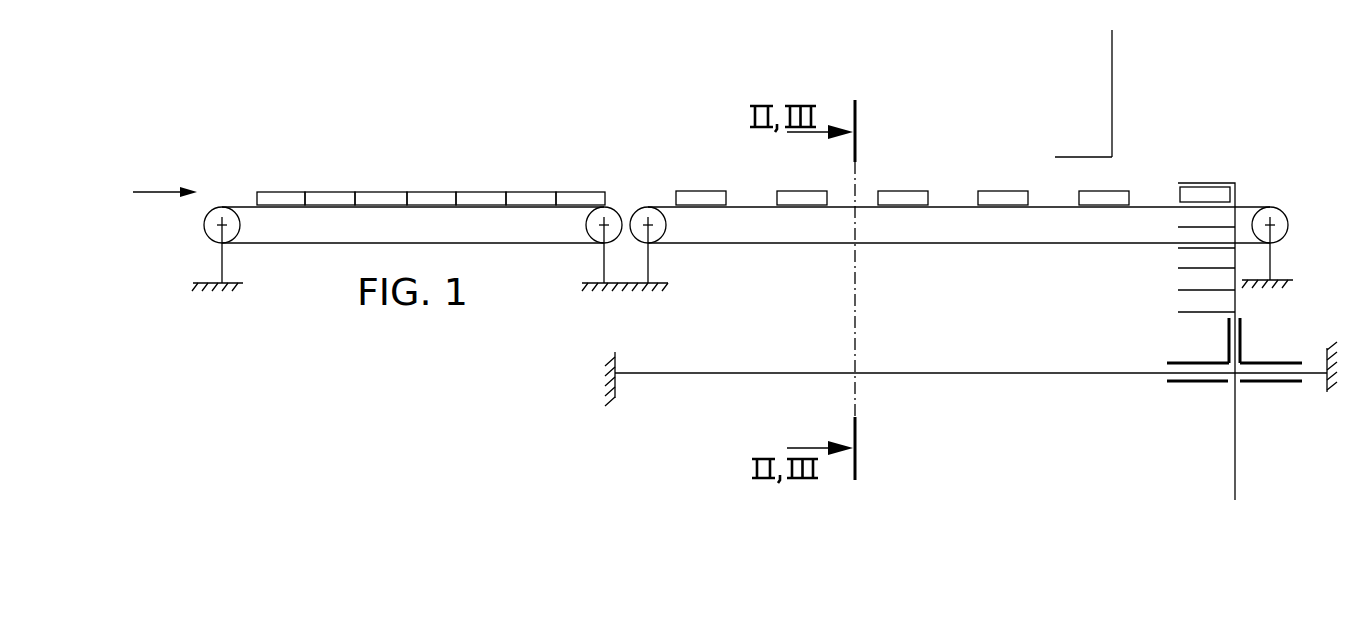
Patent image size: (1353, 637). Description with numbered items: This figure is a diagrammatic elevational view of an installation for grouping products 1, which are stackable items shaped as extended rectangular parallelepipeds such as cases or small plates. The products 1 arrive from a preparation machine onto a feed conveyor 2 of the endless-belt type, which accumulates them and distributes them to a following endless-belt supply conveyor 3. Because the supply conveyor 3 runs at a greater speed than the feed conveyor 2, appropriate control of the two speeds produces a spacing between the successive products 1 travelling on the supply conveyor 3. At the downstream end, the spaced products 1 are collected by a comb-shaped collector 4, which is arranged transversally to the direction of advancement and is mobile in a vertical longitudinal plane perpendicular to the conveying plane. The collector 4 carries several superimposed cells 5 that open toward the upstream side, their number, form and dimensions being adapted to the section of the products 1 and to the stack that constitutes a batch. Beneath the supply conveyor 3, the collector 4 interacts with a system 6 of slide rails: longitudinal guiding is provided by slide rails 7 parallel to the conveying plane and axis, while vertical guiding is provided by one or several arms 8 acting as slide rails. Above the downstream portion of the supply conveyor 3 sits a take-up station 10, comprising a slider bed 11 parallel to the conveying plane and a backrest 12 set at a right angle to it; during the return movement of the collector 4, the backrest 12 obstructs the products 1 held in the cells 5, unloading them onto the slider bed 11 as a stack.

The products 1 is at (387, 198).
The feed conveyor 2 is at (238, 202).
The supply conveyor 3 is at (952, 200).
The collector 4 is at (1226, 176).
The cells 5 is at (1188, 255).
The system of slide rails 6 is at (1264, 343).
The slide rails 7 is at (976, 378).
The arm 8 is at (1232, 475).
The take-up station 10 is at (1121, 93).
The slider bed 11 is at (1078, 155).
The backrest 12 is at (1112, 64).